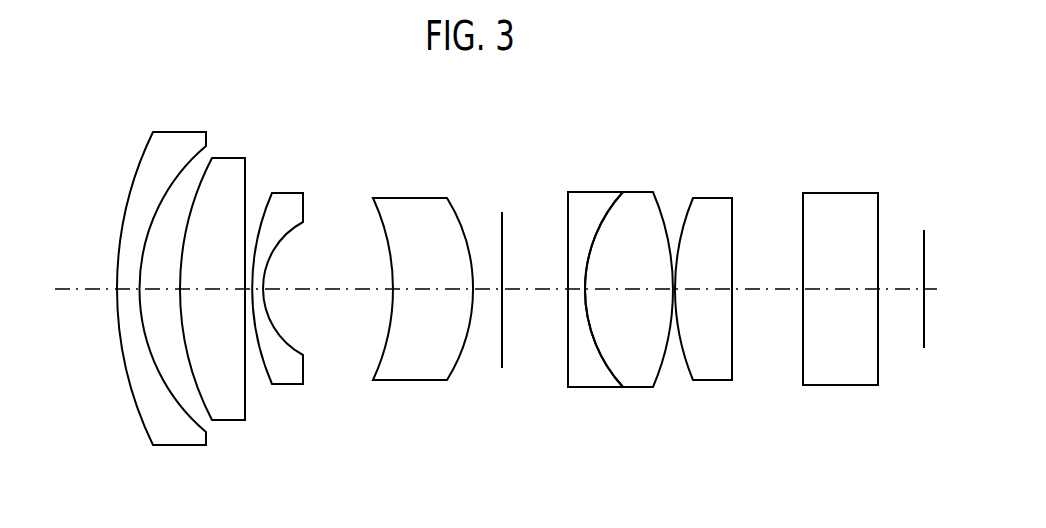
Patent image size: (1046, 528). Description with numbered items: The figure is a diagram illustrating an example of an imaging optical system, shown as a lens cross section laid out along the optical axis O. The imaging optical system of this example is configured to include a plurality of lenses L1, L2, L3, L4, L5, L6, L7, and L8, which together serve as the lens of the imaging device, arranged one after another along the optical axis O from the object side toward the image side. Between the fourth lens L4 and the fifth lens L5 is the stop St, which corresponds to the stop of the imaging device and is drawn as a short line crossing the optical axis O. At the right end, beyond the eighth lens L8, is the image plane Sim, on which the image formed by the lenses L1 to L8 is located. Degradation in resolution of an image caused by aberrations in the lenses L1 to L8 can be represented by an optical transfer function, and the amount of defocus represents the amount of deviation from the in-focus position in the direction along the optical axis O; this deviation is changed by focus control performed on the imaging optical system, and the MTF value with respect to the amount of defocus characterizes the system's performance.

The optical axis O is at (63, 288).
The lens L1 is at (182, 131).
The lens L2 is at (228, 157).
The lens L3 is at (290, 193).
The lens L4 is at (413, 197).
The lens L5 is at (595, 192).
The lens L6 is at (642, 192).
The lens L7 is at (713, 198).
The lens L8 is at (842, 193).
The stop St is at (502, 374).
The image plane Sim is at (925, 354).